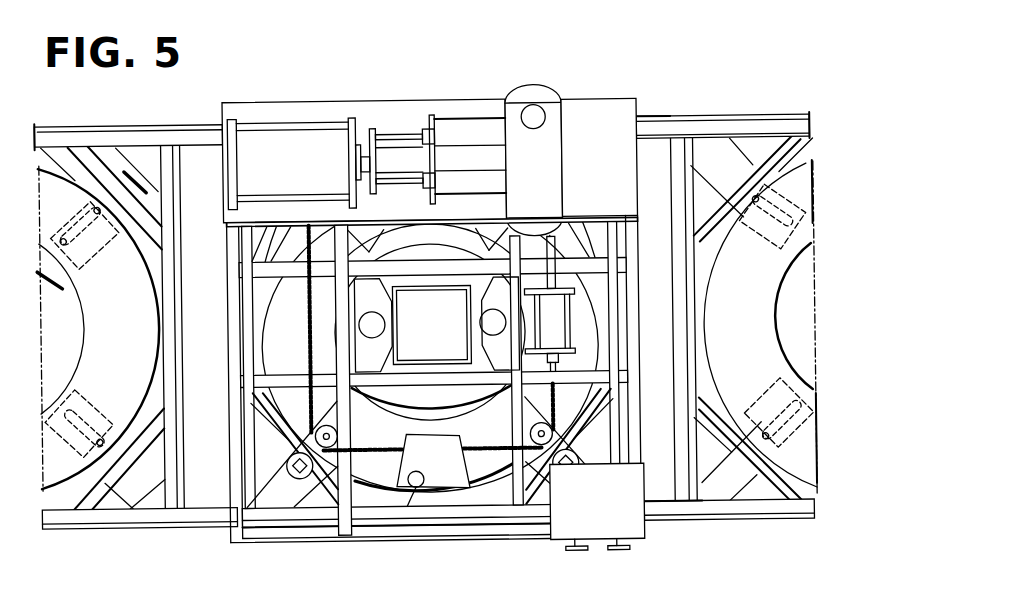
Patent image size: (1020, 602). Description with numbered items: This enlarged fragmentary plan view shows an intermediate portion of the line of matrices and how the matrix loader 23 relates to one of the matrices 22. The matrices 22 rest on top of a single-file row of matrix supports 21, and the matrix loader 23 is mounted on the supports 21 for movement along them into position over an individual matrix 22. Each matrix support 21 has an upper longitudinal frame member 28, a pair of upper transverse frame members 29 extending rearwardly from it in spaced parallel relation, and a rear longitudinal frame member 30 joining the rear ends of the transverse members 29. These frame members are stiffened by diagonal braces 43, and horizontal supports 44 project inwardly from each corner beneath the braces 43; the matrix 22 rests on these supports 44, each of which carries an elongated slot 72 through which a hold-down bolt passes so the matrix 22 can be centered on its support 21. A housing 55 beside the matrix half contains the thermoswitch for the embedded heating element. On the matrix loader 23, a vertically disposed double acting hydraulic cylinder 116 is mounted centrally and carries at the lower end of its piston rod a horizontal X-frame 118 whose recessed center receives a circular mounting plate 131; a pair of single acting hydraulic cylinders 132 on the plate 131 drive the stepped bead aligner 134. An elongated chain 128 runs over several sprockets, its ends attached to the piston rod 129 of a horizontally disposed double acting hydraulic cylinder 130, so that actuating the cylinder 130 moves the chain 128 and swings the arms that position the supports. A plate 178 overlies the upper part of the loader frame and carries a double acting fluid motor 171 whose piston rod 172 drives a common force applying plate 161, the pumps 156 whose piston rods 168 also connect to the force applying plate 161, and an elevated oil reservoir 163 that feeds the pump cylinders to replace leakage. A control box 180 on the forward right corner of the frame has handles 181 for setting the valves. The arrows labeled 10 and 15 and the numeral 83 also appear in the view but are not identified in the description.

The section line 10 is at (468, 110).
The section line 15 is at (94, 224).
The matrix support 21 is at (143, 523).
The matrix 22 is at (783, 320).
The matrix loader 23 is at (303, 103).
The upper longitudinal frame member 28 is at (665, 507).
The upper transverse frame members 29 is at (682, 263).
The rear longitudinal frame member 30 is at (668, 133).
The diagonal braces 43 is at (705, 225).
The horizontal supports 44 is at (755, 168).
The housing 55 is at (443, 485).
The elongated slot 72 is at (774, 413).
The rail end 83 is at (733, 117).
The hydraulic cylinder 116 is at (435, 349).
The X-frame 118 is at (500, 415).
The chain 128 is at (557, 388).
The piston rod 129 is at (555, 240).
The hydraulic cylinder 130 is at (562, 318).
The circular mounting plate 131 is at (447, 410).
The hydraulic cylinders 132 is at (490, 315).
The bead aligner 134 is at (403, 393).
The pumps 156 is at (483, 137).
The force applying plate 161 is at (382, 170).
The oil reservoir 163 is at (545, 143).
The piston rods 168 is at (390, 137).
The fluid motor 171 is at (260, 137).
The piston rod 172 is at (368, 150).
The plate 178 is at (600, 102).
The control box 180 is at (627, 523).
The handles 181 is at (620, 553).